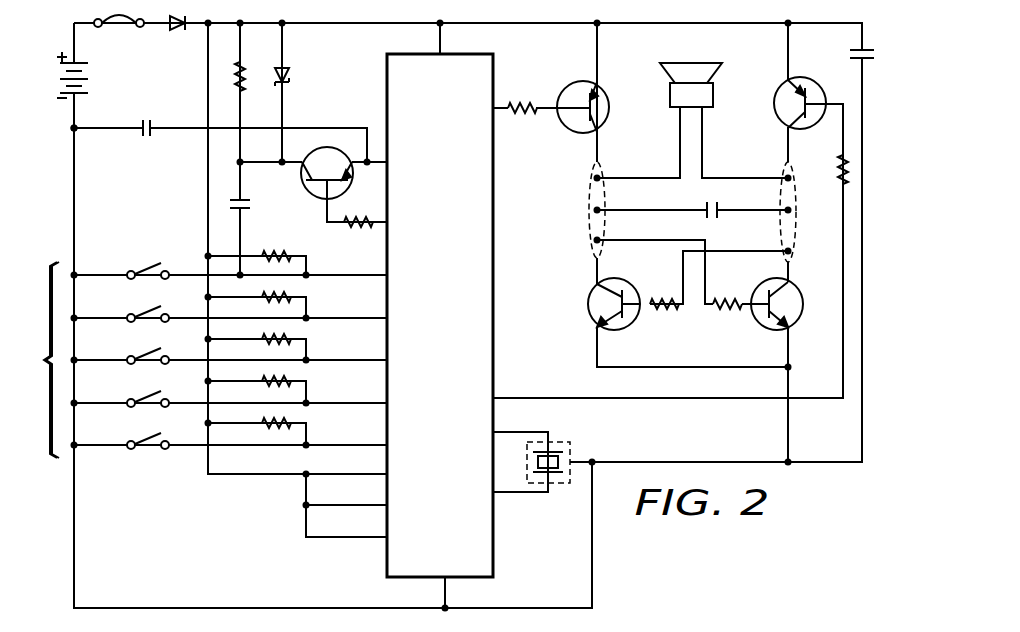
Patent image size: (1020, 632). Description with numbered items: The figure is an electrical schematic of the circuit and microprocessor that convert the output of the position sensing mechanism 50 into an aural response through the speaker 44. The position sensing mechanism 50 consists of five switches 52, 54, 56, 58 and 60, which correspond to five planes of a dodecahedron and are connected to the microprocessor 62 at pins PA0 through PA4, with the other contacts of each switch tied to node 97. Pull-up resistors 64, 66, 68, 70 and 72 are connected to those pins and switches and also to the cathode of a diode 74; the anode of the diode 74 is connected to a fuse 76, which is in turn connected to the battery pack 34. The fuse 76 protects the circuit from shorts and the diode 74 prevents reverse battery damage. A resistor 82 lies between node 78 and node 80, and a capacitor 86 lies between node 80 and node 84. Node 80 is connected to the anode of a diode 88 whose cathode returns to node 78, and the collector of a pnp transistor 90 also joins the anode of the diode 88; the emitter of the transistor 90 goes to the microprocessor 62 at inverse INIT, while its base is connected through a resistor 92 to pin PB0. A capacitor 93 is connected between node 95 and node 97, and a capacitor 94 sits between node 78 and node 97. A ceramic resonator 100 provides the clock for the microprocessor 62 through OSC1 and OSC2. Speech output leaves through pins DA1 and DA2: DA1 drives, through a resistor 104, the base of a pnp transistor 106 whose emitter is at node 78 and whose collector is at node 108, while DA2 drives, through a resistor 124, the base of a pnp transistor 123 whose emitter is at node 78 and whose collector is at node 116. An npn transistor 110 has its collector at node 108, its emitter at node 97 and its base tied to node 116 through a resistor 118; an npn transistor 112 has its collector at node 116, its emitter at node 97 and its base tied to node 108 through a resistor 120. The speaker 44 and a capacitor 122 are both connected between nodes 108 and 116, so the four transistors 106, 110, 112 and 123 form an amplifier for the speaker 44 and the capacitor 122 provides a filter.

The battery pack 34 is at (88, 86).
The fuse 76 is at (124, 30).
The diode 74 is at (176, 32).
The node 78 is at (242, 15).
The resistor 82 is at (236, 76).
The diode 88 is at (292, 73).
The transistor 90 is at (327, 147).
The node 97 is at (78, 132).
The capacitor 93 is at (147, 138).
The node 80 is at (245, 164).
The capacitor 86 is at (252, 205).
The node 95 is at (368, 166).
The resistor 92 is at (357, 227).
The node 84 is at (239, 272).
The pull-up resistor 72 is at (291, 256).
The pull-up resistor 70 is at (292, 297).
The pull-up resistor 68 is at (292, 339).
The pull-up resistor 66 is at (292, 381).
The pull-up resistor 64 is at (292, 423).
The switch 60 is at (139, 263).
The switch 58 is at (139, 306).
The switch 56 is at (139, 348).
The switch 54 is at (139, 391).
The switch 52 is at (139, 433).
The position sensing mechanism 50 is at (37, 360).
The microprocessor 62 is at (494, 222).
The resistor 104 is at (522, 101).
The transistor 106 is at (588, 92).
The speaker 44 is at (668, 97).
The node 108 is at (590, 188).
The node 116 is at (780, 178).
The transistor 123 is at (792, 90).
The capacitor 94 is at (856, 50).
The resistor 124 is at (841, 160).
The capacitor 122 is at (720, 213).
The transistor 110 is at (590, 304).
The transistor 112 is at (797, 326).
The resistor 118 is at (655, 300).
The resistor 120 is at (730, 311).
The ceramic resonator 100 is at (575, 450).